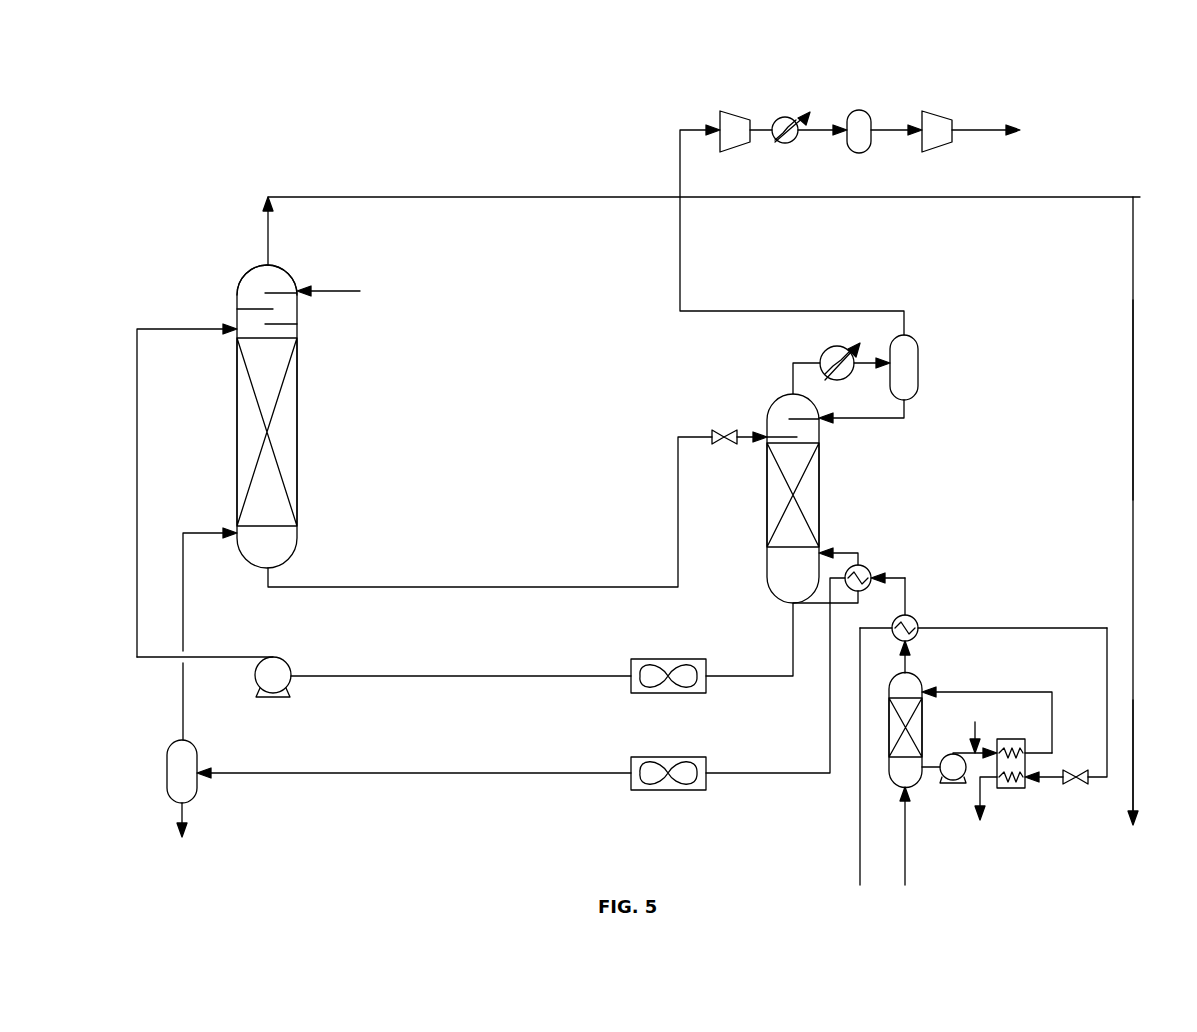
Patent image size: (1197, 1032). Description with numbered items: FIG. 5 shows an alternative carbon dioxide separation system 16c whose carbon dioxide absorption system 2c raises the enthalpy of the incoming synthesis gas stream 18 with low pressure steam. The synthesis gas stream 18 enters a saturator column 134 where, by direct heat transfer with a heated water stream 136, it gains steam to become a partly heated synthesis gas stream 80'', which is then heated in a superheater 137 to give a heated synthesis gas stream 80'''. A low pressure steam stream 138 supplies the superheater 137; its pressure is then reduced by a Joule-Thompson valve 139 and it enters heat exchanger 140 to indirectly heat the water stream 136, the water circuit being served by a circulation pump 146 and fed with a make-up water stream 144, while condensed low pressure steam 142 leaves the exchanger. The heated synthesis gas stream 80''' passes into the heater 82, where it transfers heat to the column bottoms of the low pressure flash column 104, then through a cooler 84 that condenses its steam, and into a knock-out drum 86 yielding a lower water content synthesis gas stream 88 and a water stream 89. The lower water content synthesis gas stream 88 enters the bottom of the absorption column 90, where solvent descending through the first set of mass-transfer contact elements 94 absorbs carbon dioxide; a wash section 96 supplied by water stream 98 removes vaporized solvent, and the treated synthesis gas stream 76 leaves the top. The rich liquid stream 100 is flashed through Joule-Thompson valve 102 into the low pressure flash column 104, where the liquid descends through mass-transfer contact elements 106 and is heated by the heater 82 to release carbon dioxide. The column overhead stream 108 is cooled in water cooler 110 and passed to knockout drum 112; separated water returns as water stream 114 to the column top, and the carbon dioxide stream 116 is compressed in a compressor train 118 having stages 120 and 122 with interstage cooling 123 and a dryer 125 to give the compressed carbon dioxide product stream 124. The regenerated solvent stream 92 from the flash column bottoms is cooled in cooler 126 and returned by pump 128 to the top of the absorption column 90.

The carbon dioxide absorption system 2c is at (470, 174).
The carbon dioxide separation system 16c is at (1138, 146).
The treated synthesis gas stream 76 is at (1133, 490).
The heater 82 is at (866, 565).
The cooler 84 is at (669, 791).
The knock-out drum 86 is at (197, 750).
The lower water content synthesis gas stream 88 is at (183, 583).
The water stream 89 is at (190, 812).
The absorption column 90 is at (312, 409).
The regenerated solvent stream 92 is at (190, 328).
The first set of mass-transfer contact elements 94 is at (241, 404).
The wash section 96 is at (245, 300).
The water stream 98 is at (344, 290).
The rich liquid stream 100 is at (570, 586).
The Joule-Thompson valve 102 is at (716, 431).
The low pressure flash column 104 is at (766, 498).
The mass-transfer contact elements 106 is at (815, 492).
The column overhead stream 108 is at (793, 374).
The water cooler 110 is at (826, 348).
The knockout drum 112 is at (918, 368).
The water stream 114 is at (870, 418).
The carbon dioxide stream 116 is at (680, 248).
The compressor train 118 is at (730, 72).
The compressor stage 120 is at (730, 111).
The compressor stage 122 is at (933, 111).
The interstage cooling 123 is at (789, 117).
The compressed carbon dioxide product stream 124 is at (1000, 124).
The dryer 125 is at (859, 110).
The cooler 126 is at (669, 694).
The pump 128 is at (270, 657).
The saturator column 134 is at (915, 676).
The heated water stream 136 is at (1017, 692).
The superheater 137 is at (915, 618).
The low pressure steam stream 138 is at (858, 822).
The Joule-Thompson valve 139 is at (1076, 770).
The heat exchanger 140 is at (1007, 790).
The condensed low pressure steam 142 is at (978, 804).
The make-up water stream 144 is at (975, 722).
The circulation pump 146 is at (950, 782).
The synthesis gas stream 18 is at (904, 830).
The partly heated synthesis gas stream 80'' is at (886, 657).
The heated synthesis gas stream 80''' is at (917, 583).